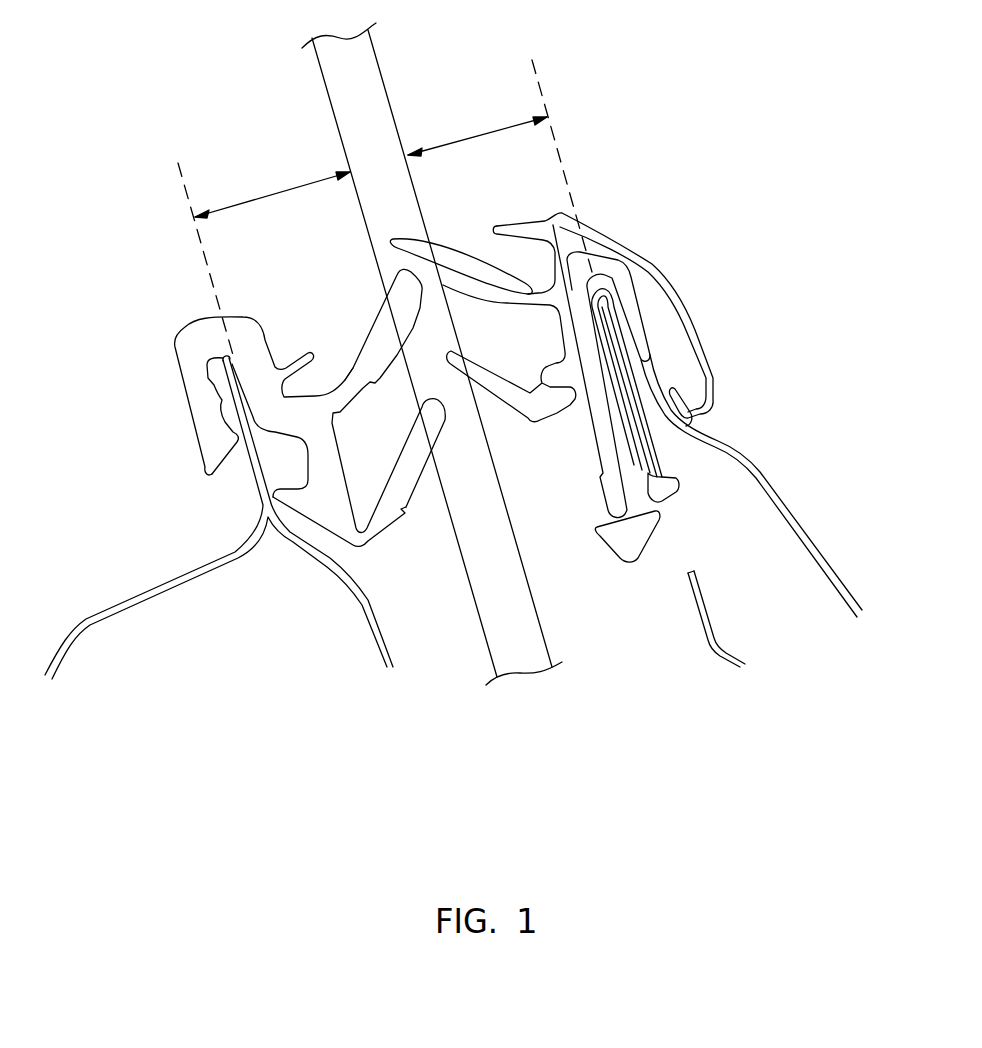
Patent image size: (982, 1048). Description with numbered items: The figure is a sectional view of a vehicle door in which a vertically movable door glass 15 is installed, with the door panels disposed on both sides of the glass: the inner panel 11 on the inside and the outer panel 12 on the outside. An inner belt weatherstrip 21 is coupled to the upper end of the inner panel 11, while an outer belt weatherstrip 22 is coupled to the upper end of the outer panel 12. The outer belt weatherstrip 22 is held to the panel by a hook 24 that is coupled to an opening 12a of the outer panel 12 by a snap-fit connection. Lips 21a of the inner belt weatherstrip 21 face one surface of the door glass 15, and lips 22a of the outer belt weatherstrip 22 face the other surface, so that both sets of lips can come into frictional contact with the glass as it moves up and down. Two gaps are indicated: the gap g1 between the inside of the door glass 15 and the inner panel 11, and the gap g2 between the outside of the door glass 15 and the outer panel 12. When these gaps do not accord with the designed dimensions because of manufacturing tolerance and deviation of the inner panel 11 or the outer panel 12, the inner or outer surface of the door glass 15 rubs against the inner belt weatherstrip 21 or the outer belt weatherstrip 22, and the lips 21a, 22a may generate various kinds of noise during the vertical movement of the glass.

The inner panel 11 is at (122, 599).
The outer panel 12 is at (803, 540).
The opening 12a is at (685, 553).
The door glass 15 is at (378, 92).
The inner belt weatherstrip 21 is at (183, 380).
The lips 21a is at (369, 333).
The outer belt weatherstrip 22 is at (670, 264).
The lips 22a is at (472, 252).
The hook 24 is at (670, 500).
The gap g1 is at (272, 193).
The gap g2 is at (477, 133).